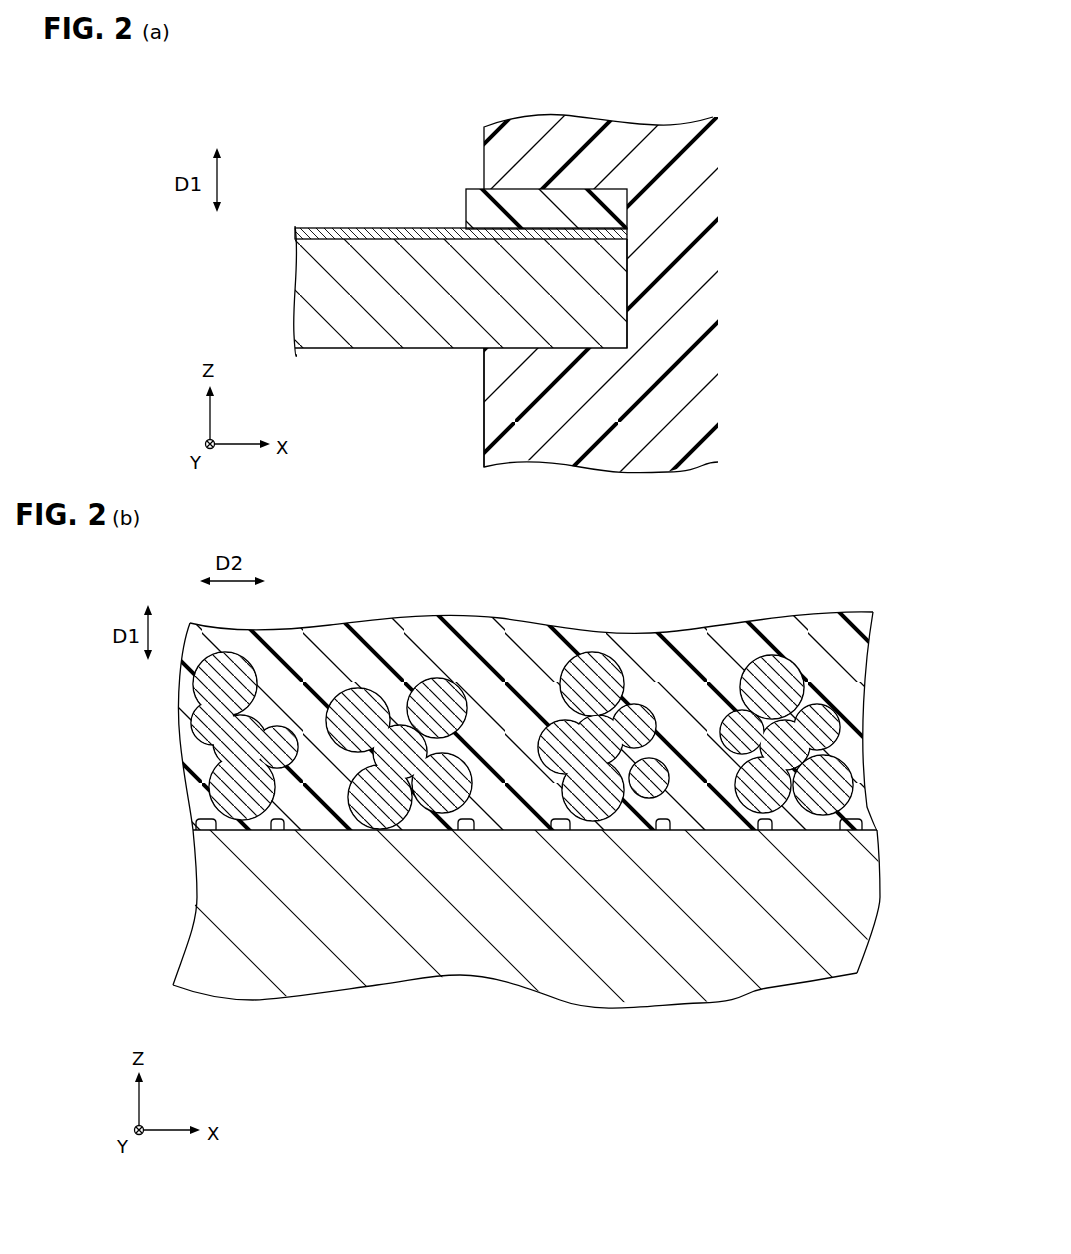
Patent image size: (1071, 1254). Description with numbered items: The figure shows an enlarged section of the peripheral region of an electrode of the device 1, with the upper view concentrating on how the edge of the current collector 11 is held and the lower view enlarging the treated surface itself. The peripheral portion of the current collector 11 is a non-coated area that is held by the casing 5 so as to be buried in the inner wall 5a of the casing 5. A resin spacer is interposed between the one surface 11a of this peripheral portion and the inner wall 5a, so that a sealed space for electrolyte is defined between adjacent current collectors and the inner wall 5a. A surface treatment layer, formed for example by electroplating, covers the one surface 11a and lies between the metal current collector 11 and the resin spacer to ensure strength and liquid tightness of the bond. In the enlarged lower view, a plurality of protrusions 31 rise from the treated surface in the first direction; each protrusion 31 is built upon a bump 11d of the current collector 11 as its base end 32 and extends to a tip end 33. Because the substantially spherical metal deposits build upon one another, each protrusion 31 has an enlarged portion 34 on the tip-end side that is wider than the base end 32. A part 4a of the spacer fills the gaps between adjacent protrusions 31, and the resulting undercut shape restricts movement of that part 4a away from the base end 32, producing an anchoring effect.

The semiconductor device 1 is at (690, 89).
The part of the spacer 4a is at (325, 783).
The casing 5 is at (480, 171).
The inner wall 5a is at (483, 432).
The current collector 11 is at (367, 332).
The one surface 11a is at (358, 228).
The bump 11d is at (207, 833).
The protrusion 31 is at (518, 824).
The base end 32 is at (205, 787).
The tip end 33 is at (354, 687).
The enlarged portion 34 is at (317, 710).